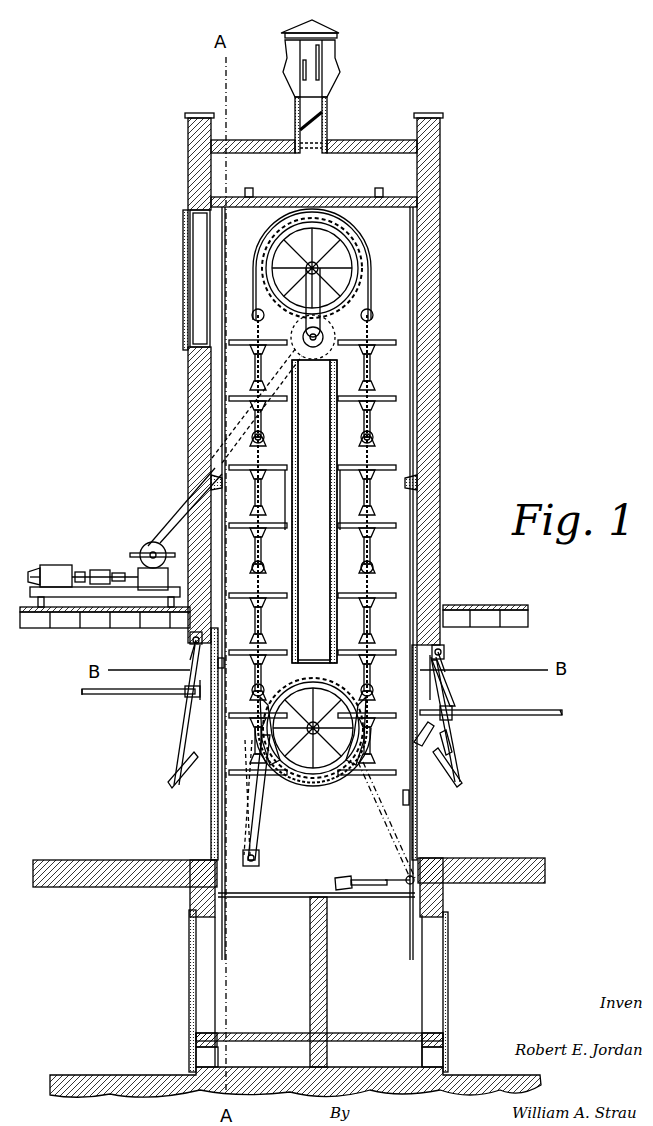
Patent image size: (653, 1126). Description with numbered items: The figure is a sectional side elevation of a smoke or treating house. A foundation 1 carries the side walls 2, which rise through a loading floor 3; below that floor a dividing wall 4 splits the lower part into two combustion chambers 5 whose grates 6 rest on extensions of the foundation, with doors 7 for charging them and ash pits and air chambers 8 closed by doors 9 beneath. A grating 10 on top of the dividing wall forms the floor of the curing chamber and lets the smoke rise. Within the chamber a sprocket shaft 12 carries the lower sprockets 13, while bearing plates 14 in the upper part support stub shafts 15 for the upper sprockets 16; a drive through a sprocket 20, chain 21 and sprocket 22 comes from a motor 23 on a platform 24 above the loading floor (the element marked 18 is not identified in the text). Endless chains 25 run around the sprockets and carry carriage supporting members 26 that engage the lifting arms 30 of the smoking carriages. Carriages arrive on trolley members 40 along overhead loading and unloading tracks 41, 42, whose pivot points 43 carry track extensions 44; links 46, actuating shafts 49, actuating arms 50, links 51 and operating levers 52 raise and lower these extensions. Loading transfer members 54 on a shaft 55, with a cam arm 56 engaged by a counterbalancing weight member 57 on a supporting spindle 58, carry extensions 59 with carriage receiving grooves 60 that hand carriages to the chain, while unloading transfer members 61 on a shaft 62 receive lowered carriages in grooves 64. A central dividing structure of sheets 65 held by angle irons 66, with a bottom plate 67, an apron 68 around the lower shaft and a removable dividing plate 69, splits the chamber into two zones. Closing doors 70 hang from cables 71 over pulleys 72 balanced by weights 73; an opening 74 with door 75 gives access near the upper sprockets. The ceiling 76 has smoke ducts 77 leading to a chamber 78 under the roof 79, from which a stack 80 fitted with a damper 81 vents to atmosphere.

The foundation 1 is at (380, 1083).
The side walls 2 is at (188, 390).
The loading floor 3 is at (150, 858).
The dividing wall 4 is at (310, 952).
The combustion chambers 5 is at (240, 988).
The perforated plates or grates 6 is at (255, 1029).
The doors 7 is at (189, 946).
The ash pits and air chambers 8 is at (215, 1036).
The doors 9 is at (188, 1052).
The grating 10 is at (290, 889).
The sprocket shaft 12 is at (313, 750).
The lower sprockets 13 is at (340, 778).
The bearing plates 14 is at (352, 294).
The stub shafts 15 is at (344, 253).
The upper sprockets 16 is at (346, 214).
The drive sprocket 18 is at (338, 338).
The sprocket 20 is at (258, 324).
The chain 21 is at (180, 496).
The sprocket 22 is at (140, 548).
The motor 23 is at (56, 560).
The platform 24 is at (64, 624).
The endless chains 25 is at (370, 421).
The carriage supporting members 26 is at (262, 431).
The lifting arms 30 is at (260, 438).
The supporting trolley members 40 is at (188, 693).
The loading track 41 is at (555, 709).
The unloading track 42 is at (105, 691).
The pivot points 43 is at (165, 688).
The track extensions 44 is at (185, 686).
The links 46 is at (444, 684).
The actuating shafts 49 is at (190, 634).
The actuating arms 50 is at (190, 647).
The links 51 is at (180, 718).
The operating levers 52 is at (170, 782).
The loading transfer members 54 is at (400, 846).
The shaft 55 is at (403, 872).
The cam arm 56 is at (390, 890).
The counterbalancing weight member 57 is at (350, 874).
The supporting spindle 58 is at (350, 890).
The extensions 59 is at (446, 744).
The carriage receiving grooves 60 is at (433, 724).
The unloading transfer members 61 is at (264, 766).
The shaft 62 is at (259, 855).
The carriage receiving grooves 64 is at (256, 690).
The sheets 65 is at (300, 492).
The supporting angle irons 66 is at (290, 499).
The bottom plate 67 is at (314, 645).
The apron 68 is at (371, 687).
The removable dividing plate 69 is at (322, 819).
The closing doors 70 is at (412, 561).
The supporting cables 71 is at (224, 556).
The pulleys 72 is at (222, 482).
The weights 73 is at (224, 663).
The opening 74 is at (200, 256).
The door 75 is at (183, 305).
The ceiling 76 is at (298, 193).
The smoke ducts 77 is at (250, 184).
The chamber 78 is at (380, 138).
The roof 79 is at (288, 135).
The ventilator or stack 80 is at (330, 96).
The damper 81 is at (327, 121).